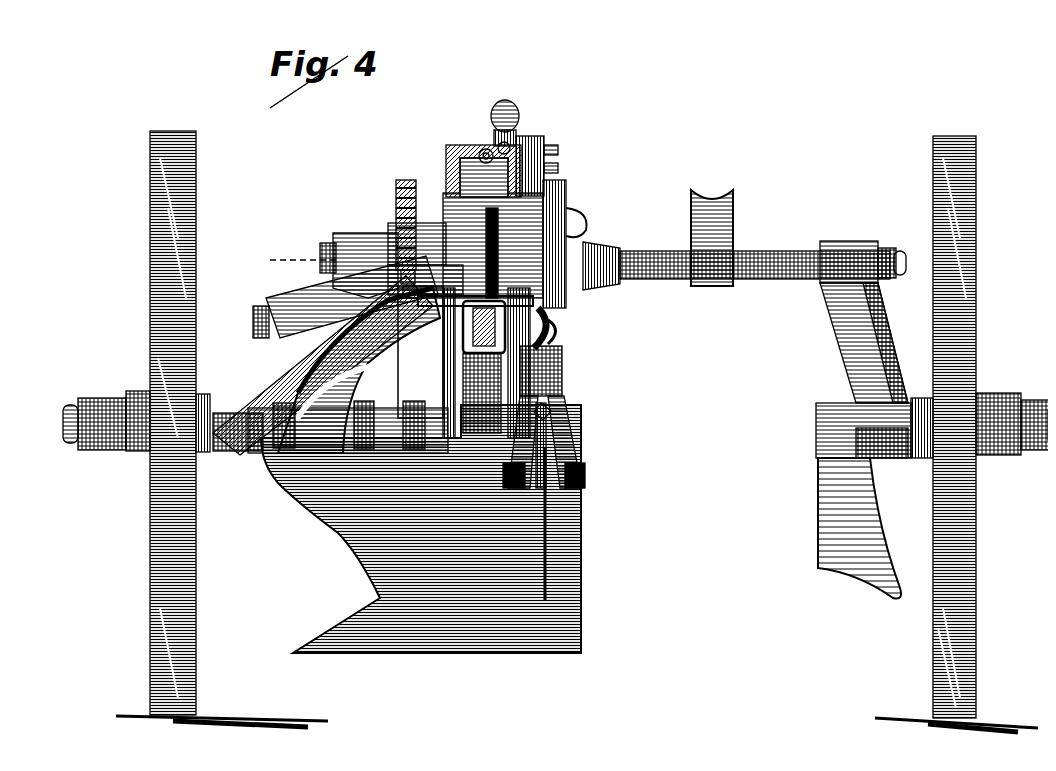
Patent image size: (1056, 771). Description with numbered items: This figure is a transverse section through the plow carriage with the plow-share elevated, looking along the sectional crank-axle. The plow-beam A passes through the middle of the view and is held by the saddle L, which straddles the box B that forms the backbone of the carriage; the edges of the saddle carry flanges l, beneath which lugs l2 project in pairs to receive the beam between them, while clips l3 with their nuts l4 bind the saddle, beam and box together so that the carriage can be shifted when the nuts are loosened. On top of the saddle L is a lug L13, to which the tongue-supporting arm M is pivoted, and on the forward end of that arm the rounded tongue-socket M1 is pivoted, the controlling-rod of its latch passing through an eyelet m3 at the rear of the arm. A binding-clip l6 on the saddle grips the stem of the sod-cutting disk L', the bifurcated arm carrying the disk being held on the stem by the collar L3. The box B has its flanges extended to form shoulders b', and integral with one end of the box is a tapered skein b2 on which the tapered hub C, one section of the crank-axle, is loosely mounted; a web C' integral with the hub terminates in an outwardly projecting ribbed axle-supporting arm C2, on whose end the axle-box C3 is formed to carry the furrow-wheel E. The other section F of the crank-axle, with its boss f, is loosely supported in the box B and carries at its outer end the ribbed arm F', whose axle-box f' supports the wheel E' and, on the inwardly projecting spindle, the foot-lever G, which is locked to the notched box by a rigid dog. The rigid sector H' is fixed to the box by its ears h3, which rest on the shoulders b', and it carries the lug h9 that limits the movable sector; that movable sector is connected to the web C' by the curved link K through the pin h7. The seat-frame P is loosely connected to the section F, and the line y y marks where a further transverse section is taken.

The furrow-wheel E is at (222, 429).
The wheel E' is at (956, 434).
The section of the crank-axle F is at (755, 276).
The ribbed arm F' is at (857, 349).
The boss f is at (602, 258).
The axle-box f' is at (882, 456).
The foot-lever G is at (847, 528).
The seat-frame P is at (725, 204).
The section line y y is at (640, 240).
The sod-cutting disk L' is at (580, 524).
The saddle L is at (493, 245).
The collar L3 is at (555, 410).
The lug L13 is at (520, 175).
The tongue-supporting arm M is at (445, 156).
The tongue-socket M1 is at (488, 98).
The eyelet m3 is at (472, 146).
The plow-beam A is at (455, 325).
The flanges l is at (432, 300).
The lugs l2 is at (548, 322).
The clips l3 is at (554, 348).
The nuts l4 is at (558, 300).
The binding-clip l6 is at (572, 228).
The rigid sector H' is at (393, 225).
The box B is at (420, 216).
The shoulders b' is at (423, 288).
The tapered skein b2 is at (268, 278).
The laterally-projecting ears h3 is at (408, 270).
The pin h7 is at (400, 403).
The lug h9 is at (359, 265).
The tapered hub C is at (312, 280).
The web C' is at (348, 370).
The axle-supporting arm C2 is at (250, 358).
The axle-box C3 is at (238, 442).
The link K is at (392, 380).